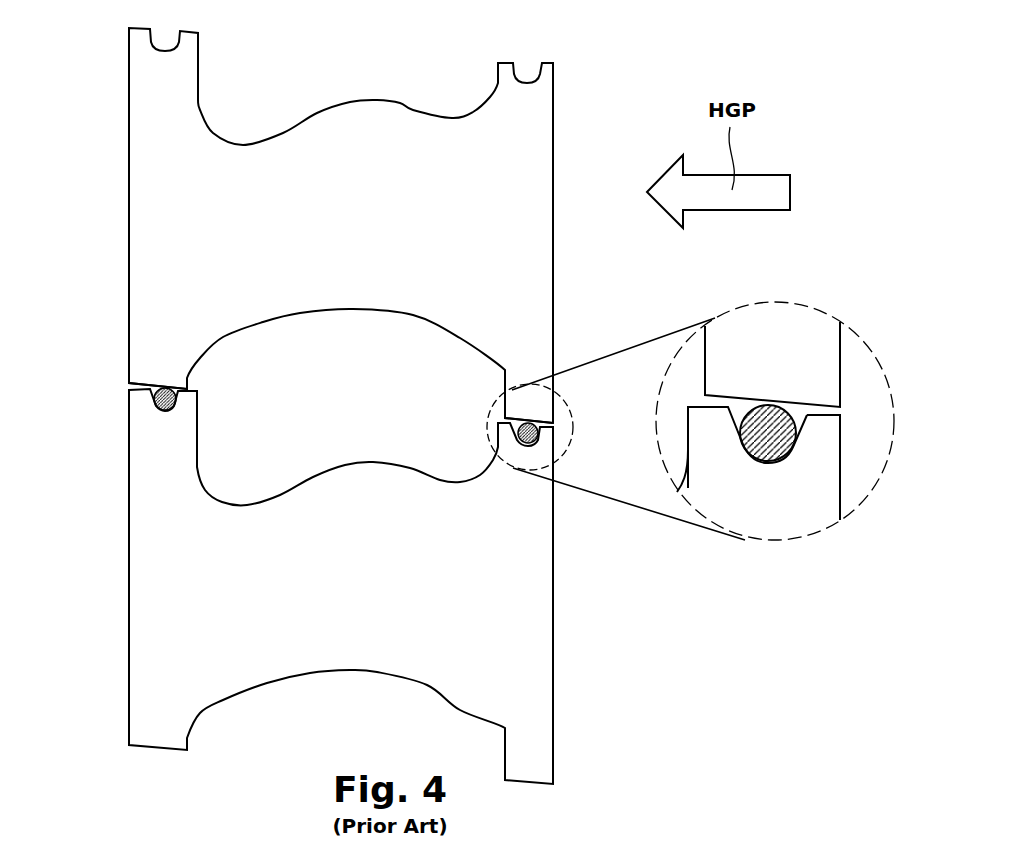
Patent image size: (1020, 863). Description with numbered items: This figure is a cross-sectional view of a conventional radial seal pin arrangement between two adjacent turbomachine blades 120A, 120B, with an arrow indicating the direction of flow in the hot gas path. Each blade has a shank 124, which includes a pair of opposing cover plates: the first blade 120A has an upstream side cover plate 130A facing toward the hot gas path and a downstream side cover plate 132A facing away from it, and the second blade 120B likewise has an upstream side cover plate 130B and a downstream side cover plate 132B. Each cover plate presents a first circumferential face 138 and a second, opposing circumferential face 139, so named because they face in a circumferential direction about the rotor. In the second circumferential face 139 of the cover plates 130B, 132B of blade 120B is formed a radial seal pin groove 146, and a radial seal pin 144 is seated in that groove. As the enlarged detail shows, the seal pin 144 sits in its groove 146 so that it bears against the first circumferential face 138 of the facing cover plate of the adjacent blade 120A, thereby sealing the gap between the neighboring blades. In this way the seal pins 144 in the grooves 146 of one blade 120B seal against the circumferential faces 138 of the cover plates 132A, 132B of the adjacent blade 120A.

The turbomachine blade 120A is at (118, 86).
The turbomachine blade 120B is at (118, 460).
The shank 124 is at (335, 225).
The upstream side cover plate 130A is at (523, 372).
The upstream side cover plate 130B is at (513, 472).
The downstream side cover plate 132A is at (153, 363).
The downstream side cover plate 132B is at (155, 462).
The first circumferential face 138 is at (176, 385).
The second circumferential face 139 is at (192, 390).
The radial seal pin 144 is at (155, 400).
The radial seal pin groove 146 is at (775, 455).